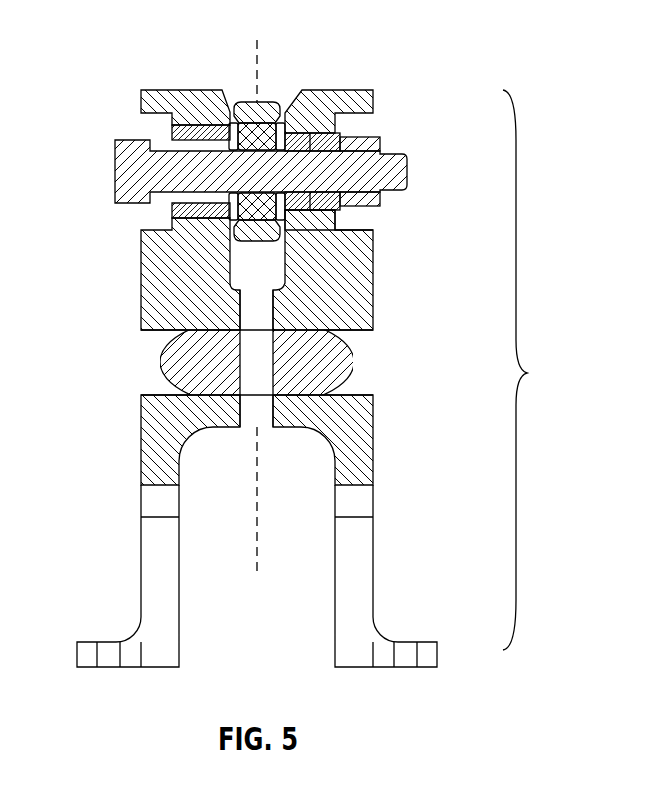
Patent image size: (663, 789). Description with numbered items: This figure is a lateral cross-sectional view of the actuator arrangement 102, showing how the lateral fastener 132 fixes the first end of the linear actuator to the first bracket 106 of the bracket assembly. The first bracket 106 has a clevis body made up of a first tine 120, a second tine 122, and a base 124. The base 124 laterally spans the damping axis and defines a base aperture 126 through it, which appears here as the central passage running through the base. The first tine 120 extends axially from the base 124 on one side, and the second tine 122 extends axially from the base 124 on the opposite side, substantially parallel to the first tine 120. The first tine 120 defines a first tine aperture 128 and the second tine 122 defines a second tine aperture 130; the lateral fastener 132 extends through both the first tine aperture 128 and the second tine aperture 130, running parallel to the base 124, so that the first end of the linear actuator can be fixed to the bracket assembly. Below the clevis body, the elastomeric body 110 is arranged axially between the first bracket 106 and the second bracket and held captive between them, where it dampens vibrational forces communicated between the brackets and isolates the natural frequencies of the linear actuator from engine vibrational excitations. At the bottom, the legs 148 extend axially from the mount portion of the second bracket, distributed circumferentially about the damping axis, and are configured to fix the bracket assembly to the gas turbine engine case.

The actuator arrangement 102 is at (157, 28).
The first bracket 106 is at (540, 370).
The elastomeric body 110 is at (347, 374).
The first tine 120 is at (143, 100).
The second tine 122 is at (374, 244).
The base 124 is at (297, 318).
The base aperture 126 is at (250, 318).
The first tine aperture 128 is at (117, 213).
The second tine aperture 130 is at (401, 116).
The lateral fastener 132 is at (125, 172).
The legs 148 is at (362, 577).